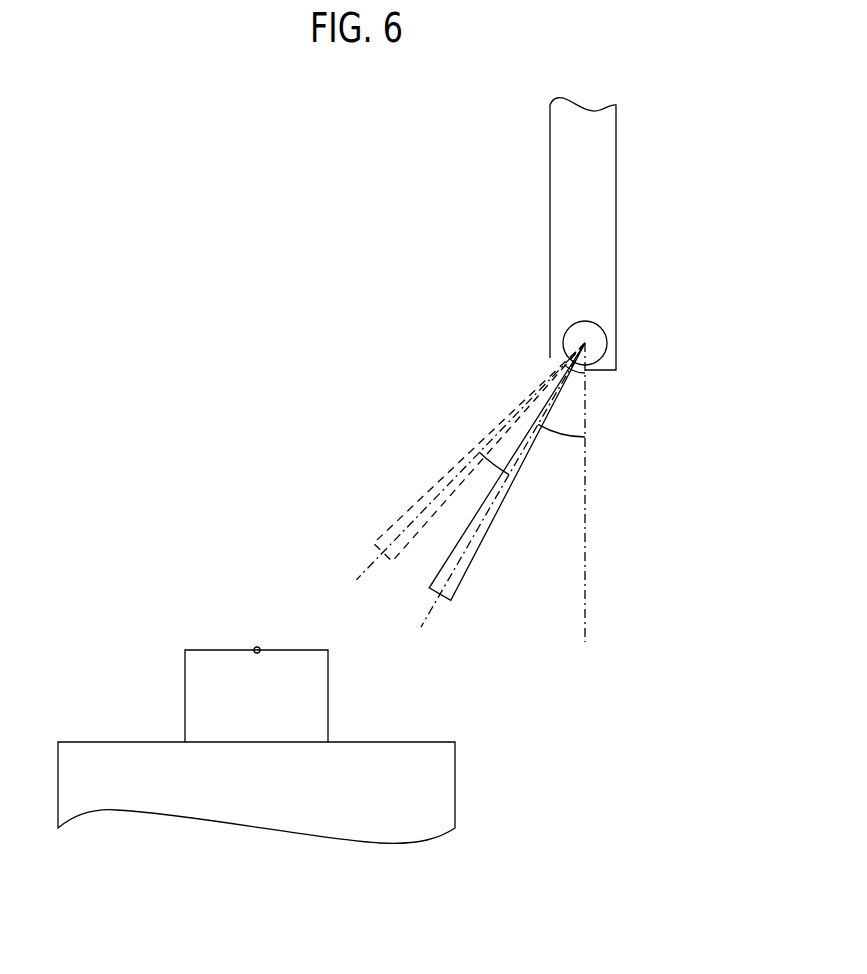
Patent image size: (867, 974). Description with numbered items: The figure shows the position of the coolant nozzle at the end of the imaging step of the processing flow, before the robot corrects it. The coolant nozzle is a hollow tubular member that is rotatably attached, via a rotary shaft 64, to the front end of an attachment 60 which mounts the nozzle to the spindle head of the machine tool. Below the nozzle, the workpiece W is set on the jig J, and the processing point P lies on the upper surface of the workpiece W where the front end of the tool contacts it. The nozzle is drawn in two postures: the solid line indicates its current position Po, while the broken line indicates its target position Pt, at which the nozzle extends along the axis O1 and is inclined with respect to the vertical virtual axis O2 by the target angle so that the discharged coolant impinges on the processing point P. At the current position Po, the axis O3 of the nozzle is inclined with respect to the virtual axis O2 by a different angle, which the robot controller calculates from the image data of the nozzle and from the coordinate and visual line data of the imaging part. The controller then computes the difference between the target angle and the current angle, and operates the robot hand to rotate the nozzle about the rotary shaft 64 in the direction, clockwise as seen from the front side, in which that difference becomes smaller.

The attachment 60 is at (588, 268).
The rotary shaft 64 is at (597, 322).
The current position Po is at (485, 550).
The target position Pt is at (448, 463).
The axis of coolant nozzle O1 is at (392, 518).
The virtual axis O2 is at (587, 577).
The axis of coolant nozzle at current position O3 is at (473, 582).
The workpiece W is at (212, 697).
The processing point P is at (257, 653).
The jig J is at (427, 782).